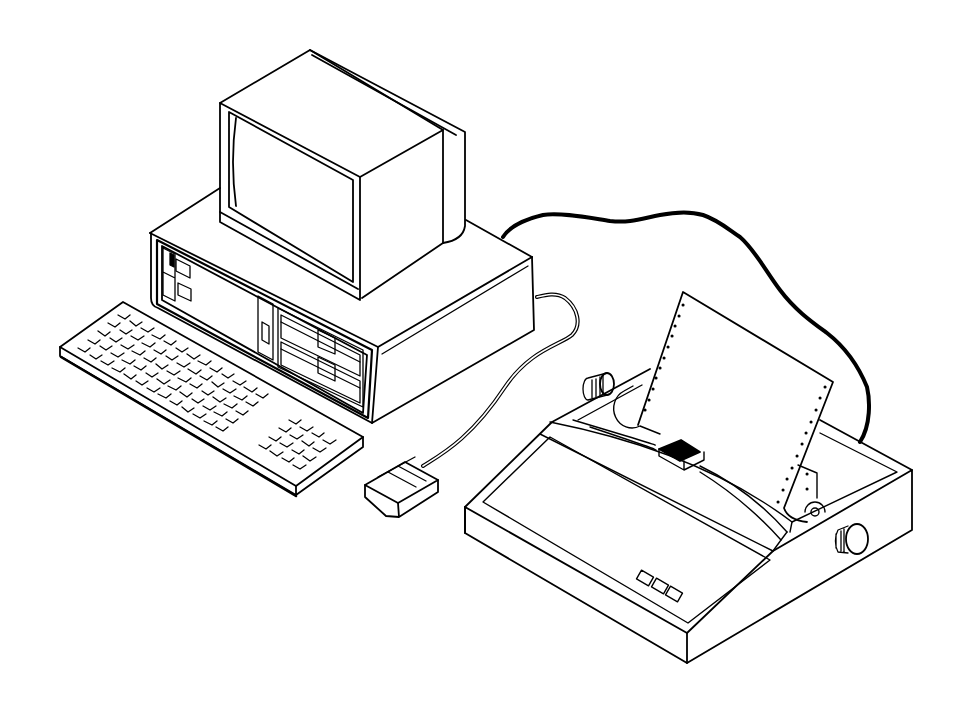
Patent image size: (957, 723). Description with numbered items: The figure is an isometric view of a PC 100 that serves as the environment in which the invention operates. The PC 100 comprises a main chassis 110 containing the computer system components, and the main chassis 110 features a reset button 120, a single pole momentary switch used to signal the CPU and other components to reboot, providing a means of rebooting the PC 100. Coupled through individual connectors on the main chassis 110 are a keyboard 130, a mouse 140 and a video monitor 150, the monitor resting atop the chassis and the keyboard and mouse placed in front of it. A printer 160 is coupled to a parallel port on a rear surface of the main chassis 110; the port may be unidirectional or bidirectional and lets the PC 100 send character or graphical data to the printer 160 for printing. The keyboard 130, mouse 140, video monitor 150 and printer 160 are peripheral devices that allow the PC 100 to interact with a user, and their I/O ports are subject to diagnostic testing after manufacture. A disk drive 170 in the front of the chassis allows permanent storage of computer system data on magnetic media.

The PC 100 is at (614, 101).
The main chassis 110 is at (484, 242).
The reset button 120 is at (176, 283).
The keyboard 130 is at (79, 347).
The mouse 140 is at (375, 511).
The video monitor 150 is at (284, 96).
The printer 160 is at (748, 603).
The disk drive 170 is at (360, 376).